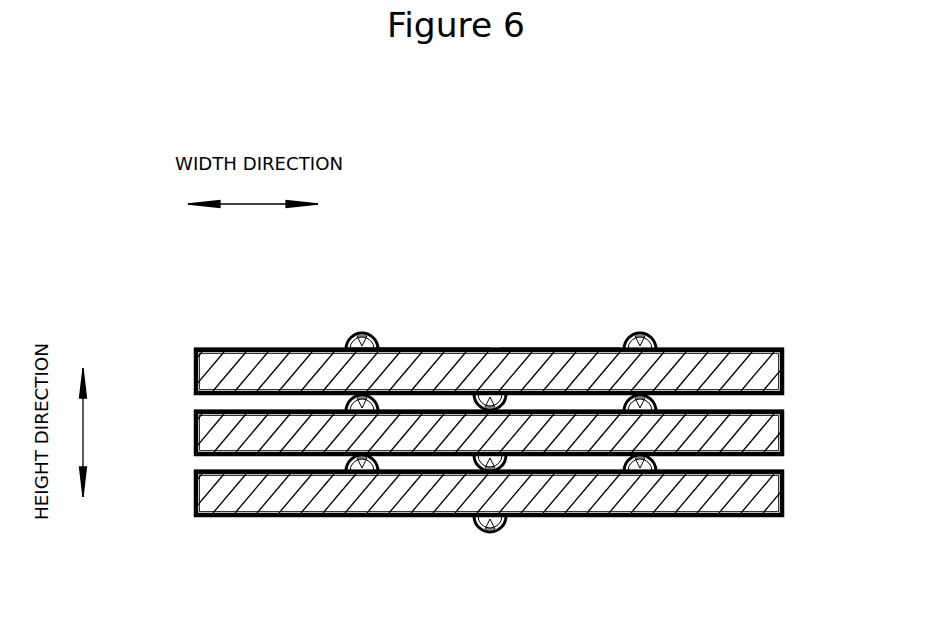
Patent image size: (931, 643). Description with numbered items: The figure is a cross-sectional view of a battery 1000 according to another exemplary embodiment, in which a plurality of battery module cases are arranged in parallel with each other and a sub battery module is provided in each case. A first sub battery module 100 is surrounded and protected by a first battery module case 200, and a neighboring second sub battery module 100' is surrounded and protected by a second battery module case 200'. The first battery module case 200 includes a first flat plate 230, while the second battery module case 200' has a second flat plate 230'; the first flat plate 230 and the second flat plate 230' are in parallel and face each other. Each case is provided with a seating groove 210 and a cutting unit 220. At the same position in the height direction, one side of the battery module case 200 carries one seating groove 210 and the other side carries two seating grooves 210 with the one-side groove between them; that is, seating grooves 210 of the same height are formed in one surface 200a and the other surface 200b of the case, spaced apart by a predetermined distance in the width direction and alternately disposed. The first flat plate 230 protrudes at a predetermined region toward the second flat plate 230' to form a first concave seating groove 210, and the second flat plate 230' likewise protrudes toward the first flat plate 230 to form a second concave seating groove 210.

The battery 1000 is at (713, 243).
The first sub battery module 100 is at (518, 366).
The second sub battery module 100' is at (523, 480).
The first battery module case 200 is at (448, 347).
The second battery module case 200' is at (444, 456).
The one surface of the battery module case 200a is at (438, 348).
The other surface of the battery module case 200b is at (555, 348).
The seating groove 210 is at (347, 343).
The cutting unit 220 is at (367, 333).
The first flat plate 230 is at (602, 476).
The second flat plate 230' is at (534, 528).